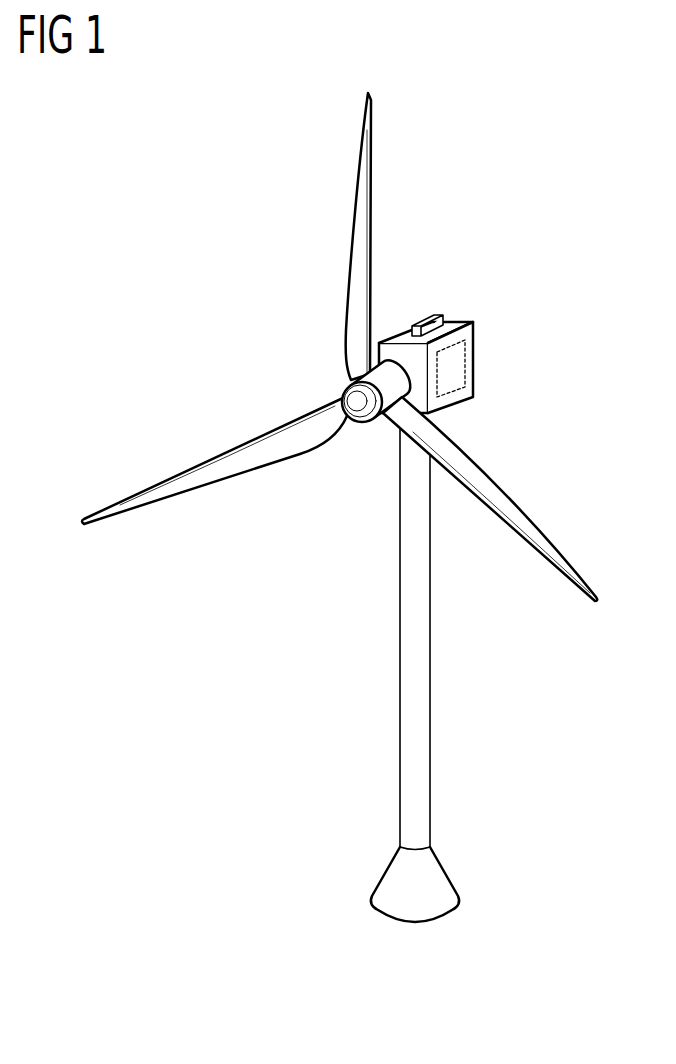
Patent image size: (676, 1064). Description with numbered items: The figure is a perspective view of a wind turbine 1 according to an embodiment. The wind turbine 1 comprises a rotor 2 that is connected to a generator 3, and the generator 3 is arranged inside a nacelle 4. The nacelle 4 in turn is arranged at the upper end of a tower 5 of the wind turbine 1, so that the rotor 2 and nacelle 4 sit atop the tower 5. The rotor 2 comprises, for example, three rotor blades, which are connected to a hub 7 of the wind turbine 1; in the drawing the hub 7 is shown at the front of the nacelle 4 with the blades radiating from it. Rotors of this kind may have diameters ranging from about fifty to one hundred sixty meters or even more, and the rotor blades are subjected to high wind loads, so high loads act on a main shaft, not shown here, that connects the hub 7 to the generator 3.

The wind turbine 1 is at (192, 249).
The rotor 2 is at (339, 347).
The generator 3 is at (457, 368).
The nacelle 4 is at (473, 342).
The tower 5 is at (420, 793).
The hub 7 is at (403, 387).